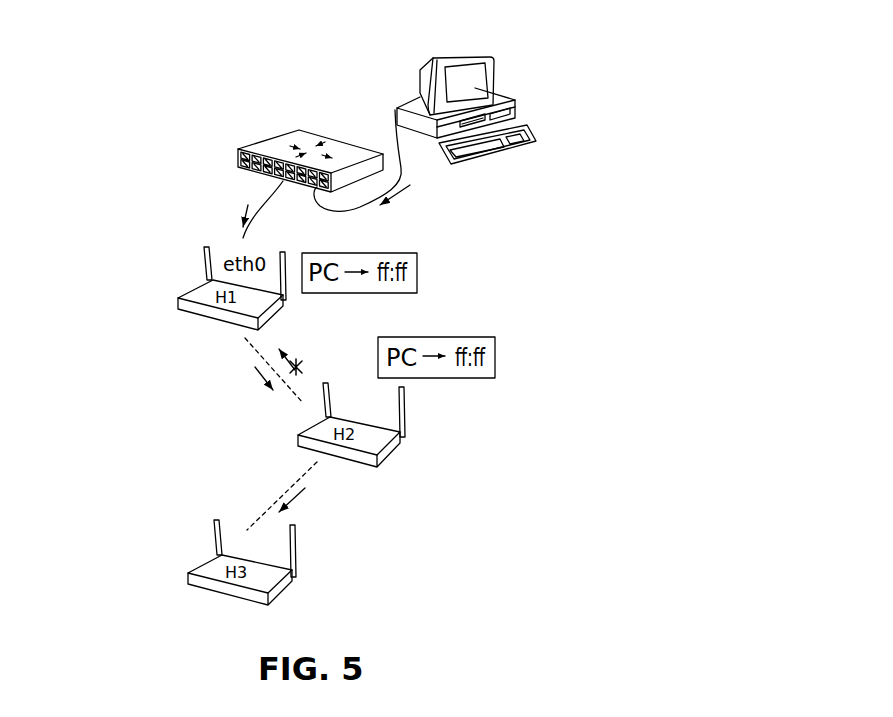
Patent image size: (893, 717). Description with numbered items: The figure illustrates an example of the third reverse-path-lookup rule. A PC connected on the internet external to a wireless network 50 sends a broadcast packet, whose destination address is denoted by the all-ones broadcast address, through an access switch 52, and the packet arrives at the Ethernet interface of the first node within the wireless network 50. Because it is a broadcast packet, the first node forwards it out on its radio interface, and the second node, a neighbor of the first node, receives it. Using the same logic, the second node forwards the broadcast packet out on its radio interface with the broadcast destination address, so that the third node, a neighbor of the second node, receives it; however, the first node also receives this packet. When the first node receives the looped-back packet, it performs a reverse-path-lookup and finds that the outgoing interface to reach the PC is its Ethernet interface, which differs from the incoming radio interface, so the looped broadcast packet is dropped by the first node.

The wireless network 50 is at (115, 216).
The access switch 52 is at (253, 145).
The element PC is at (477, 60).